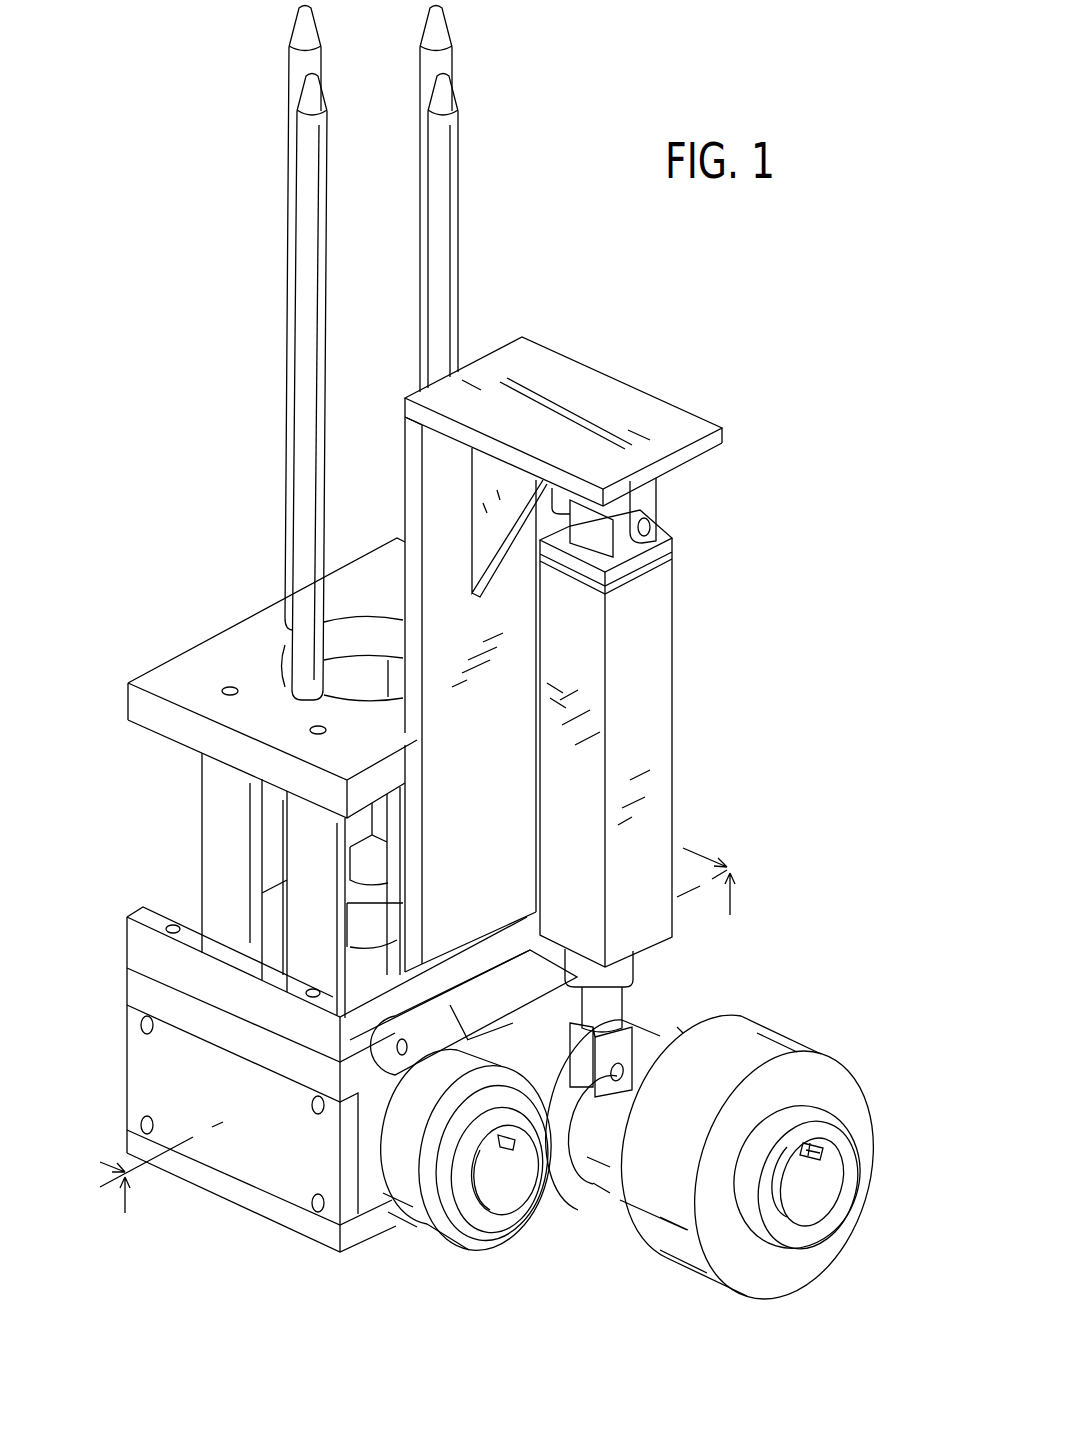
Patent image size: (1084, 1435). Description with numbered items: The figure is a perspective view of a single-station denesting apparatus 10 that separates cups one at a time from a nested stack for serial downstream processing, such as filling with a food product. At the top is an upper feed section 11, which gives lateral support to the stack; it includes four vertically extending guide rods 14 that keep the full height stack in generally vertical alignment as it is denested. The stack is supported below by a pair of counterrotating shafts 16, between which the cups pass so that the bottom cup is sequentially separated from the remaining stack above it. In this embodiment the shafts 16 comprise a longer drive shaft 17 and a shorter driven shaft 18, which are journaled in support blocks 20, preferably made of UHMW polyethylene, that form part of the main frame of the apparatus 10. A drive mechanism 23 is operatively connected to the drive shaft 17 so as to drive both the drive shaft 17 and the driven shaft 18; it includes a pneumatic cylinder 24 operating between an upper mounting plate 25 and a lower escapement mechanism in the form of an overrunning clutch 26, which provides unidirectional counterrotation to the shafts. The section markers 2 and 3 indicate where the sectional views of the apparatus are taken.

The denesting apparatus 10 is at (266, 588).
The upper feed section 11 is at (372, 335).
The guide rods 14 is at (420, 237).
The counterrotating shafts 16 is at (515, 1180).
The drive shaft 17 is at (832, 1172).
The driven shaft 18 is at (496, 1205).
The support blocks 20 is at (373, 1110).
The drive mechanism 23 is at (727, 1053).
The pneumatic cylinder 24 is at (657, 705).
The upper mounting plate 25 is at (628, 392).
The overrunning clutch 26 is at (684, 1050).
The section line 2- 2 is at (429, 1048).
The section line 3- 3 is at (405, 1003).